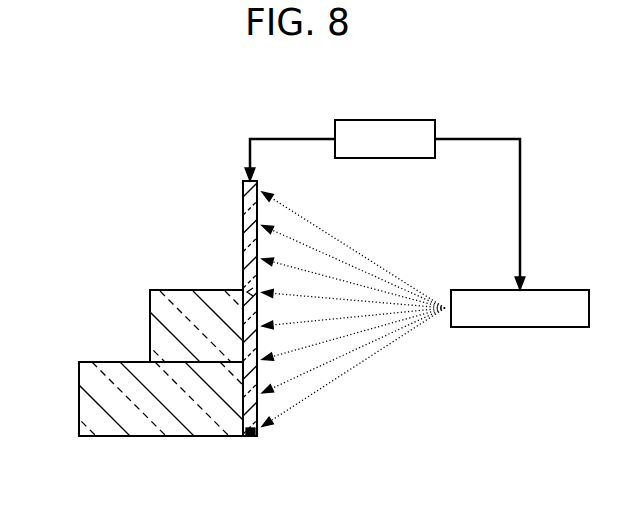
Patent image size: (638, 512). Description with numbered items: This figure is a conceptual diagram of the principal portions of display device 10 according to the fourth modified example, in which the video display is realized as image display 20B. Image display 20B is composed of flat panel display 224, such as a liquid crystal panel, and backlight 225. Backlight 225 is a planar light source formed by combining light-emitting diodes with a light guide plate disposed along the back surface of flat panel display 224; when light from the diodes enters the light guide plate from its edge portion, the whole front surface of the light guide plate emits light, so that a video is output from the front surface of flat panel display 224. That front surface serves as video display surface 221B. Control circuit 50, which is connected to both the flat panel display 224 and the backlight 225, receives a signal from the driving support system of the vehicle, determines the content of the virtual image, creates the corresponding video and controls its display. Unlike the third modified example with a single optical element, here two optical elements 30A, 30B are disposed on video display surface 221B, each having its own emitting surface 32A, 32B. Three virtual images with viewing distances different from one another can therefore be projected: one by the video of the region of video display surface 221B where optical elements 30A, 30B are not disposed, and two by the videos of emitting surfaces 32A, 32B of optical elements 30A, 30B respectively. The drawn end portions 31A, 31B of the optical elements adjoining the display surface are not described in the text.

The display device 10 is at (102, 193).
The image display 20B is at (449, 387).
The optical element 30A is at (156, 423).
The optical element 30B is at (165, 298).
The first incident end portion 31A is at (251, 428).
The second incident end portion 31B is at (249, 292).
The emitting surface 32A is at (79, 393).
The emitting surface 32B is at (150, 335).
The control circuit 50 is at (387, 122).
The video display surface 221B is at (243, 220).
The flat panel display 224 is at (253, 410).
The backlight 225 is at (458, 326).